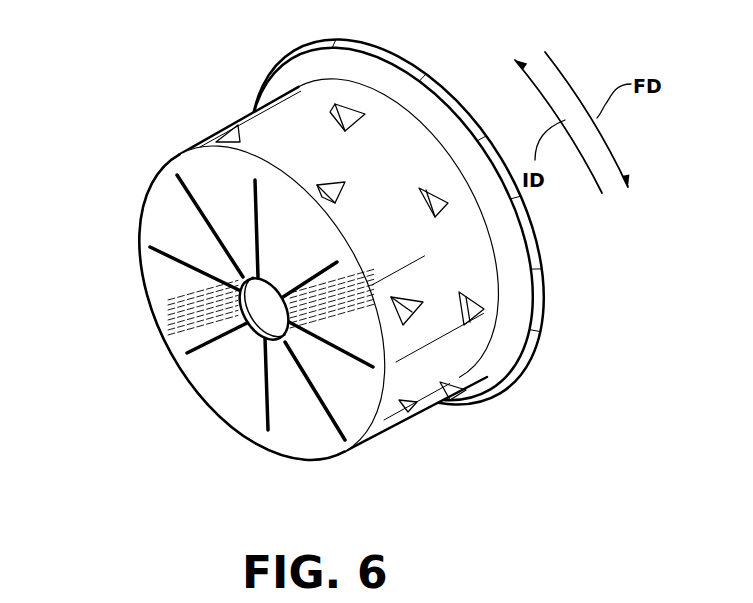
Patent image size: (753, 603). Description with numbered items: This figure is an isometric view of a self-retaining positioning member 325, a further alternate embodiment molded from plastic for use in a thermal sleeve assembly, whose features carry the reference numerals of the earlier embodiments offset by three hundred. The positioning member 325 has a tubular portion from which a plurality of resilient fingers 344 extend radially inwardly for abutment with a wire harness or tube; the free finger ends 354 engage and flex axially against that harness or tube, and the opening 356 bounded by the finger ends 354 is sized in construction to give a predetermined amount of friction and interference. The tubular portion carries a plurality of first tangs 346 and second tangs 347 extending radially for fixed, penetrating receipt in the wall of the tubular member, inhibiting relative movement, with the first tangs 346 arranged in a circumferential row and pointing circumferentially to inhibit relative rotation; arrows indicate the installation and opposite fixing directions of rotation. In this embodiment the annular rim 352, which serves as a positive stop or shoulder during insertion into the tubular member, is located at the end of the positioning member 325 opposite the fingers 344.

The positioning member 325 is at (342, 251).
The fingers 344 is at (231, 361).
The first tangs 346 is at (343, 107).
The second tangs 347 is at (237, 131).
The rim 352 is at (540, 327).
The finger ends 354 is at (245, 310).
The opening 356 is at (245, 290).